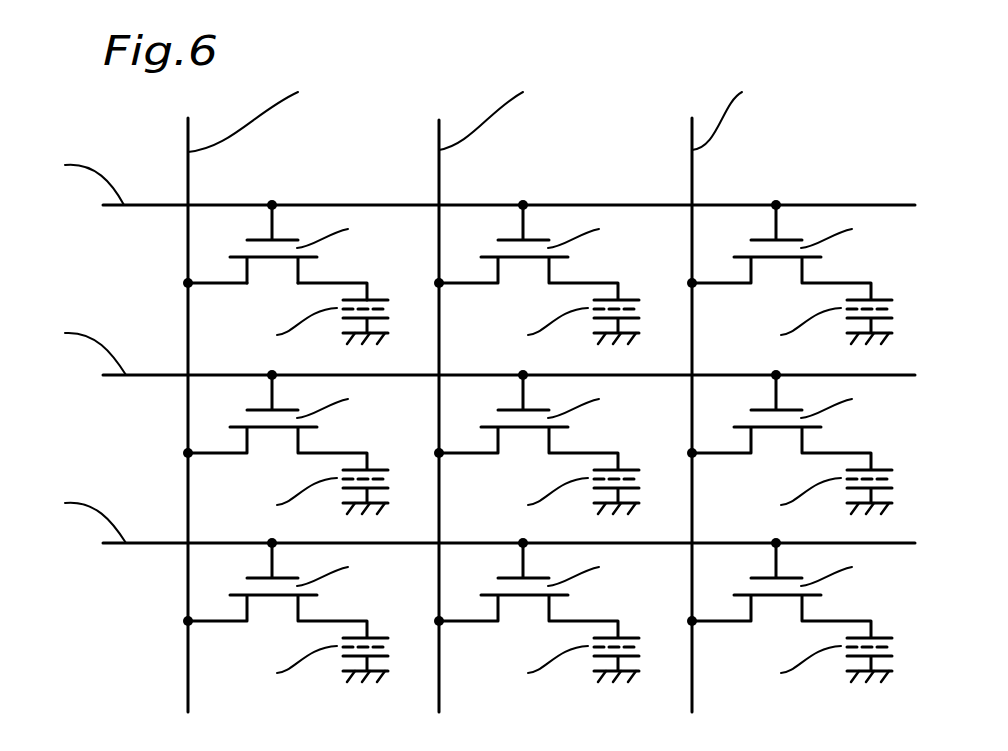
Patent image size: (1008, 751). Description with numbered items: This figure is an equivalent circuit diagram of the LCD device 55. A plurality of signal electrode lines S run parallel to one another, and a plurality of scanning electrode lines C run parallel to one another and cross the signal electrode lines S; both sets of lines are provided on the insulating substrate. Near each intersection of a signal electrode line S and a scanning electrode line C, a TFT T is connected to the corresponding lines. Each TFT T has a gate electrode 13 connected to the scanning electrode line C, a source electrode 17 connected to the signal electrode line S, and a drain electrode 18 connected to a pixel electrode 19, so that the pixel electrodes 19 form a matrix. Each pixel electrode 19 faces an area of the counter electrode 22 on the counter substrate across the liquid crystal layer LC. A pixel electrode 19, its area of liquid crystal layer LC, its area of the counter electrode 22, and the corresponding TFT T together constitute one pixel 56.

The gate electrode 13 is at (303, 183).
The source electrode 17 is at (164, 279).
The drain electrode 18 is at (357, 257).
The pixel electrode 19 is at (386, 275).
The counter electrode 22 is at (385, 346).
The LCD device 55 is at (812, 127).
The pixel 56 is at (209, 227).